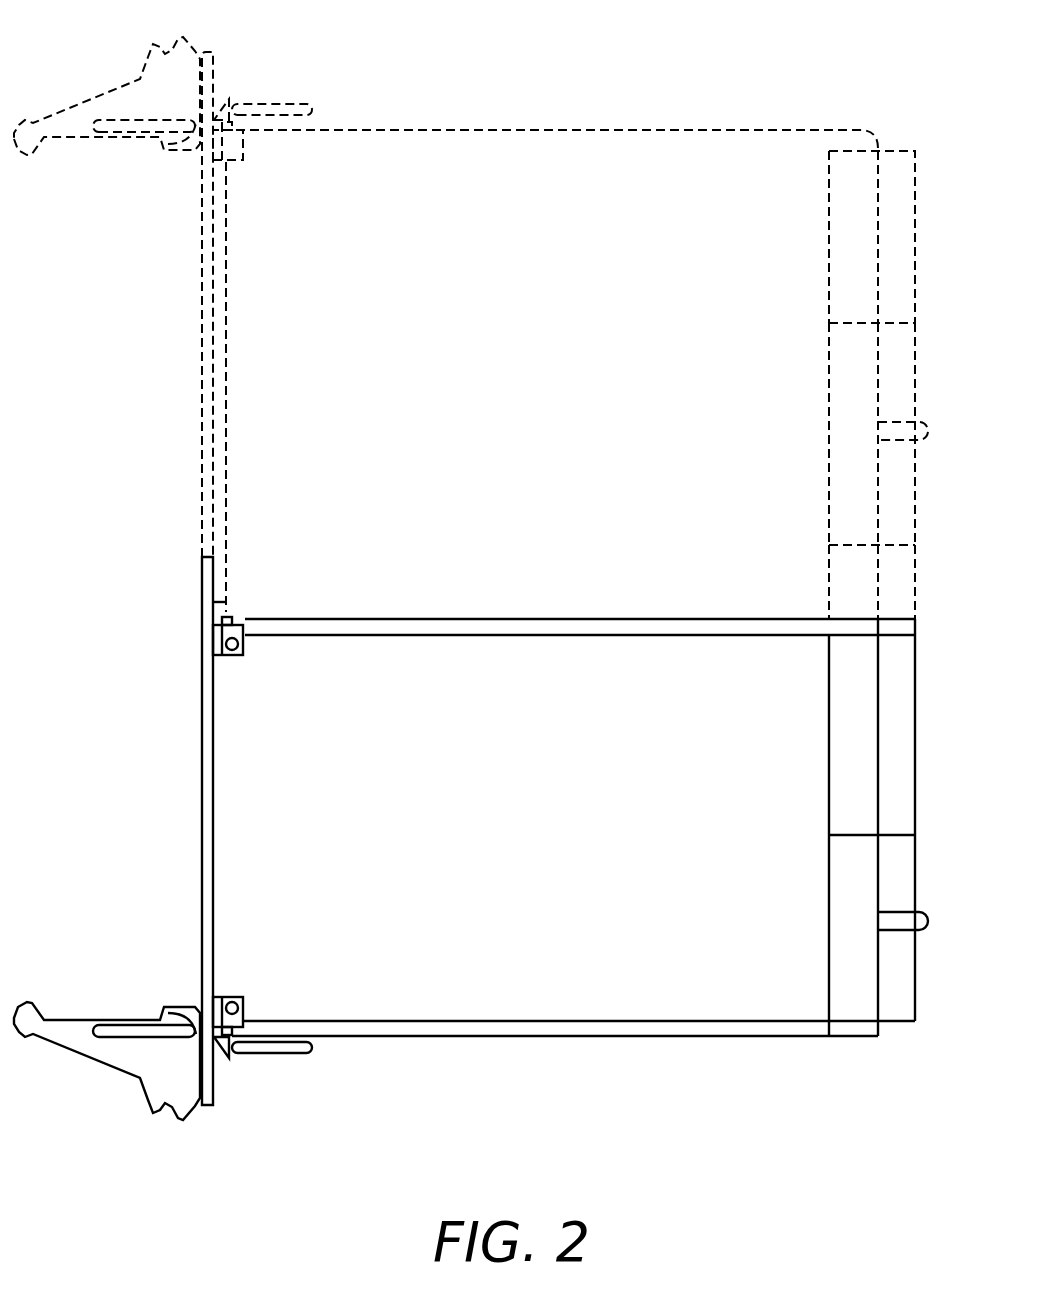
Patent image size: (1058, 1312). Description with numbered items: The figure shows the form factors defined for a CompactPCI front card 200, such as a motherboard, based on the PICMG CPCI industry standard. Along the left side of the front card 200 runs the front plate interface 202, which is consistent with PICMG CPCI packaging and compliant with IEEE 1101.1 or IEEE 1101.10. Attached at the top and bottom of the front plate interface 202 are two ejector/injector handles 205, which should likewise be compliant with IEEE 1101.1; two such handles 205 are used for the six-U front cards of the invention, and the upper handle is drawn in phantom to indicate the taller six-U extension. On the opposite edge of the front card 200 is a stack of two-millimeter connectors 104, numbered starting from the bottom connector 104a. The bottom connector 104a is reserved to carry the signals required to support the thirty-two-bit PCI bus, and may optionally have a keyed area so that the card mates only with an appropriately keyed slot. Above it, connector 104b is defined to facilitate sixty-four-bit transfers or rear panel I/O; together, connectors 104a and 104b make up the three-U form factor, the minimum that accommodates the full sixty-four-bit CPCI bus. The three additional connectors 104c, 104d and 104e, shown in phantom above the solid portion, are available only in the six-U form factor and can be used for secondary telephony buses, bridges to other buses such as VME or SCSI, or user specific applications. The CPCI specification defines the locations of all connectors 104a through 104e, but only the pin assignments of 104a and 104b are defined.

The connectors 104 is at (817, 593).
The bottom connector 104a is at (843, 908).
The connector 104b is at (843, 722).
The connector 104c is at (843, 572).
The connector 104d is at (843, 405).
The connector 104e is at (843, 232).
The front card 200 is at (543, 983).
The front plate interface 202 is at (202, 676).
The ejector/injector handles 205 is at (88, 103).